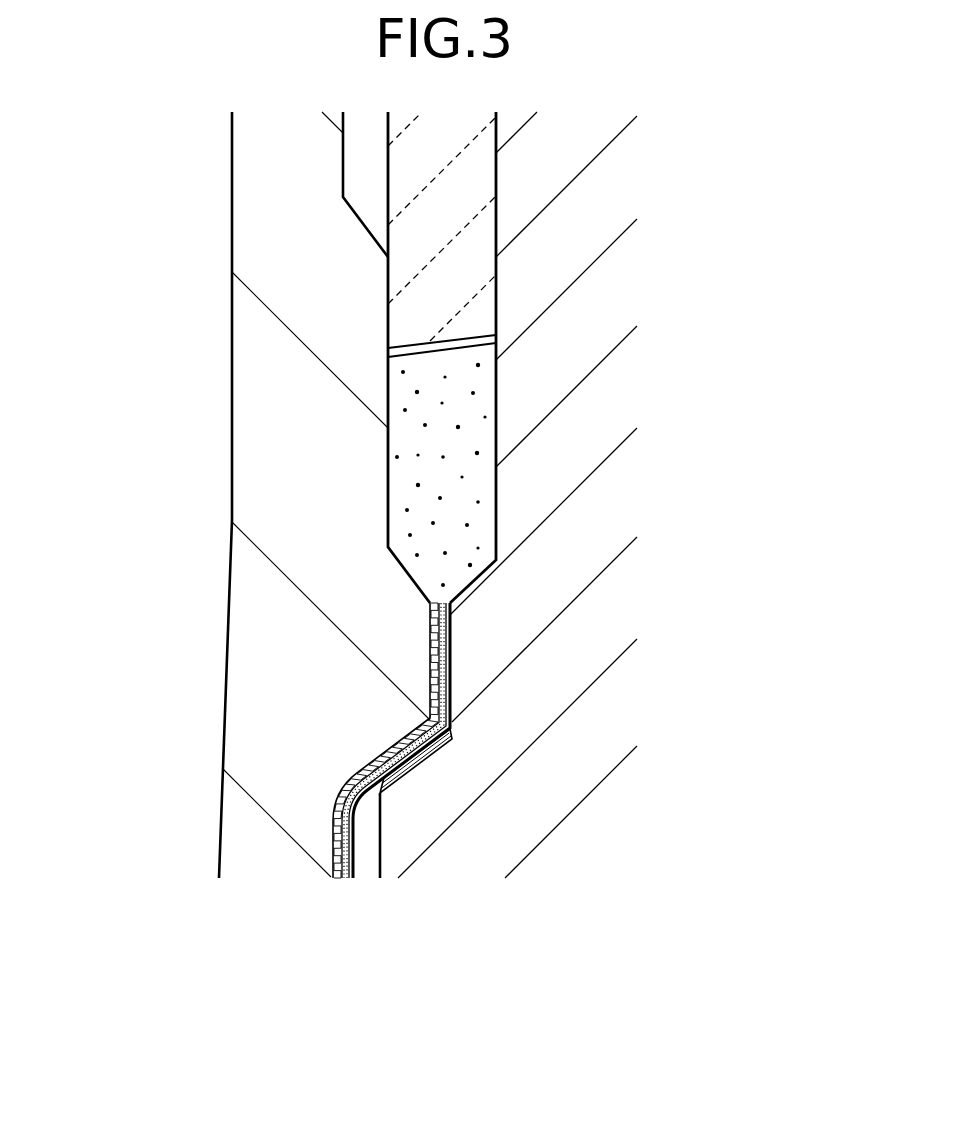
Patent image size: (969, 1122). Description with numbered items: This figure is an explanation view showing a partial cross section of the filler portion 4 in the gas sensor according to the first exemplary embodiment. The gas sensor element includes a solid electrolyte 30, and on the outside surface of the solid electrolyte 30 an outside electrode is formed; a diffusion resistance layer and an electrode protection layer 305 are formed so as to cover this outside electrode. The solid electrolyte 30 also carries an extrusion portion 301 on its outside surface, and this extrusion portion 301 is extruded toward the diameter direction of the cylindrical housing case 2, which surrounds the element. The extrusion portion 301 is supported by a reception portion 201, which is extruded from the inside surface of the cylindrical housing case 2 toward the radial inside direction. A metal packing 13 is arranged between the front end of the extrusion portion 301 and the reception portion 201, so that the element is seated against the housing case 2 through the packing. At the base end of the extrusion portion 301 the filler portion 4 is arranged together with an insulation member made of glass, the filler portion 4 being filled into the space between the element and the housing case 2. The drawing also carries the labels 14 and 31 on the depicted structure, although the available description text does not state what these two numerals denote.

The solid electrolyte 30 is at (293, 295).
The tube 14 is at (462, 263).
The cylindrical housing case 2 is at (555, 352).
The filler portion 4 is at (458, 468).
The layered strip 31 is at (581, 730).
The extrusion portion 301 is at (402, 678).
The electrode protection layer 305 is at (452, 718).
The metal packing 13 is at (407, 773).
The reception portion 201 is at (467, 775).